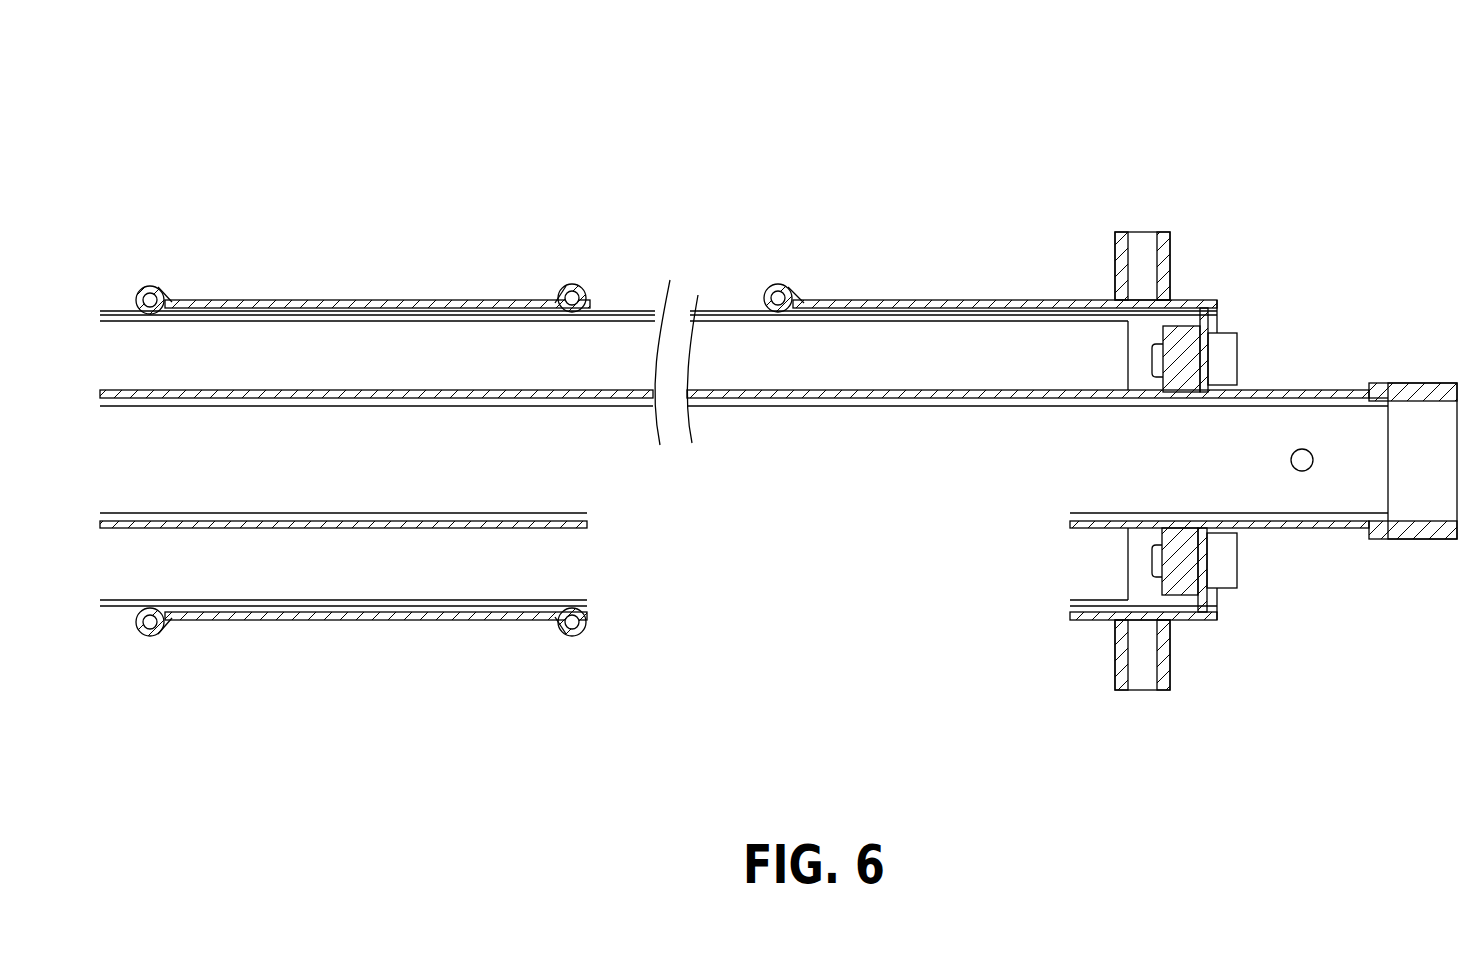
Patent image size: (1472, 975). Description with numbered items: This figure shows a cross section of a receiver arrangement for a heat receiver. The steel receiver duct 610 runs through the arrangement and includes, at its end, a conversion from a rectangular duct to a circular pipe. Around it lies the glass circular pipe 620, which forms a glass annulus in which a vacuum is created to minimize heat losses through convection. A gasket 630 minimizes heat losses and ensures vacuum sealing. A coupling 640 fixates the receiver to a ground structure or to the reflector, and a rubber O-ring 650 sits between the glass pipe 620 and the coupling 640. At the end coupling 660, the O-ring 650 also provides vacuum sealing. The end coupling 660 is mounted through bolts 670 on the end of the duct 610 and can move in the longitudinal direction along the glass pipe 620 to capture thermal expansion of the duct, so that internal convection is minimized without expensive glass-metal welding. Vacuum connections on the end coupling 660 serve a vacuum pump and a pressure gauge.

The steel receiver duct 610 is at (631, 388).
The glass circular pipe 620 is at (626, 309).
The gasket 630 is at (1200, 316).
The coupling 640 is at (145, 290).
The rubber O-ring 650 is at (158, 286).
The end coupling 660 is at (906, 298).
The bolts 670 is at (1236, 338).